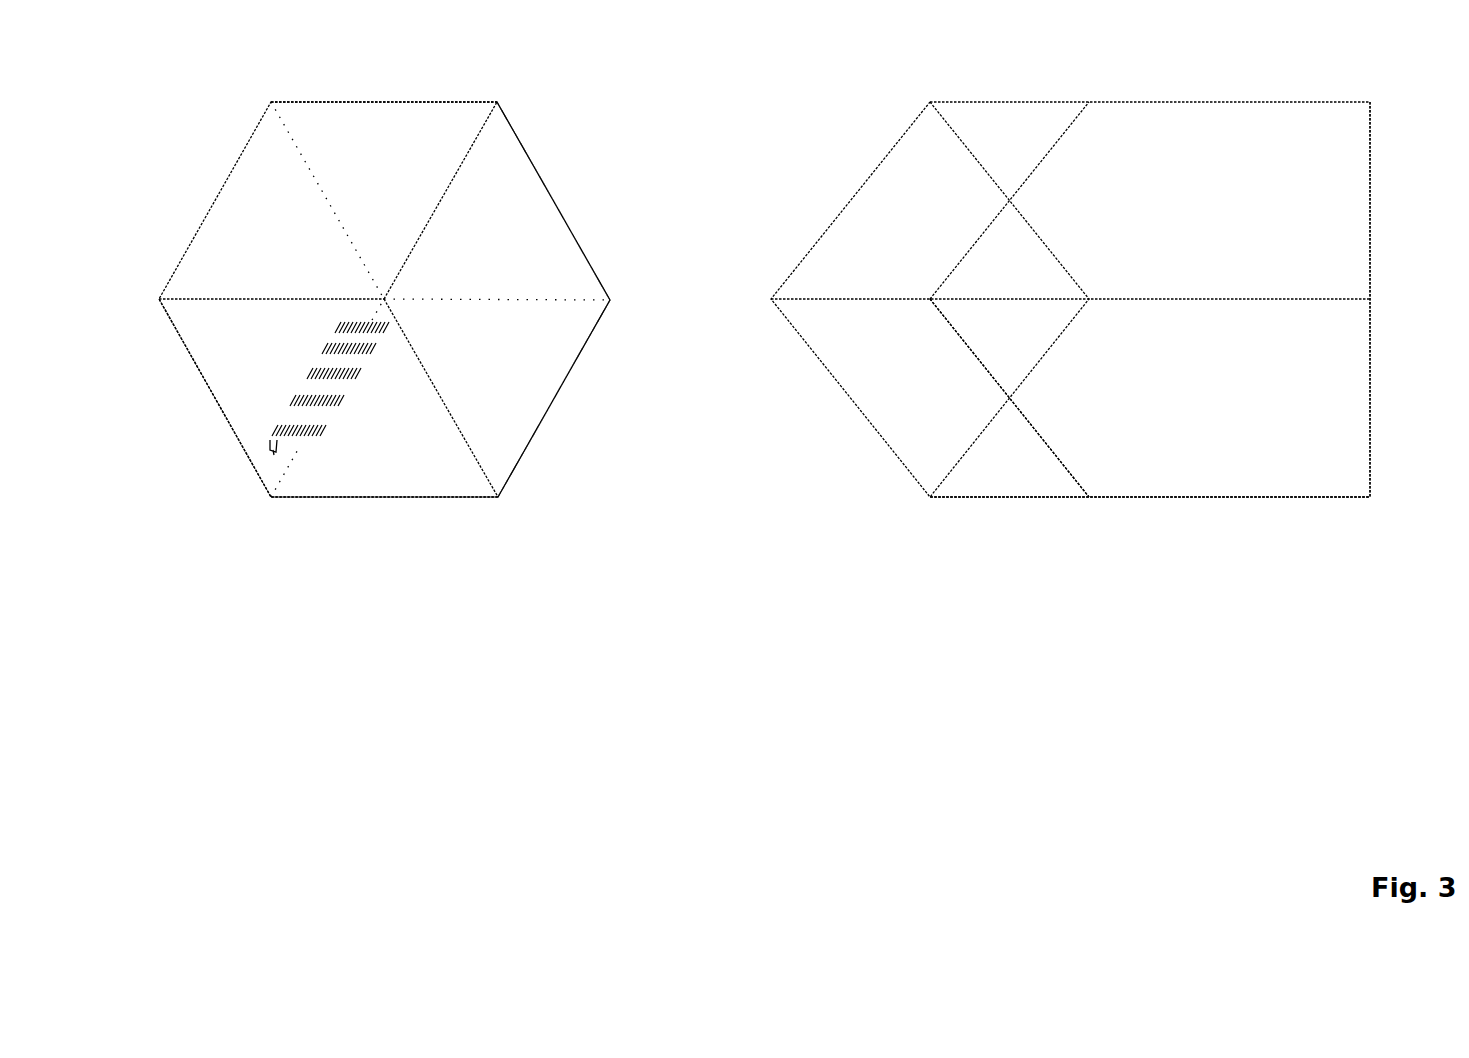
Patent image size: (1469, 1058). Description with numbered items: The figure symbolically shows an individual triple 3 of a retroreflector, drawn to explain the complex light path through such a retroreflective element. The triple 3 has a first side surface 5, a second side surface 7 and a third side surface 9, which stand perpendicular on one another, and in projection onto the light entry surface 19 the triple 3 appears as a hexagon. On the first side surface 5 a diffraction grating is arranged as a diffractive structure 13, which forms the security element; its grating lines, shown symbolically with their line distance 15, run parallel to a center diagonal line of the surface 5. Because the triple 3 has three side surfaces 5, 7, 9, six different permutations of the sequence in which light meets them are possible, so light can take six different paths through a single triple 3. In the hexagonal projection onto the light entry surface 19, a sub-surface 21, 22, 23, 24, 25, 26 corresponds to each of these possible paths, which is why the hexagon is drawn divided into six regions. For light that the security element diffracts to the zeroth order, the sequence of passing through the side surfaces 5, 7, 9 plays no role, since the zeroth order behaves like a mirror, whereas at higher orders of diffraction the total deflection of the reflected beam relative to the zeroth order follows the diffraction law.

The triple 3 is at (146, 95).
The sub-surface 25 is at (299, 219).
The sub-surface 26 is at (378, 150).
The third side surface 9 is at (987, 144).
The sub-surface 24 is at (528, 235).
The second side surface 7 is at (1010, 322).
The sub-surface 23 is at (492, 355).
The sub-surface 22 is at (407, 418).
The diffractive structure 13 is at (325, 433).
The sub-surface 21 is at (288, 445).
The first side surface 5 is at (275, 460).
The light entry surface 19 is at (1370, 458).
The line distance 15 is at (356, 514).